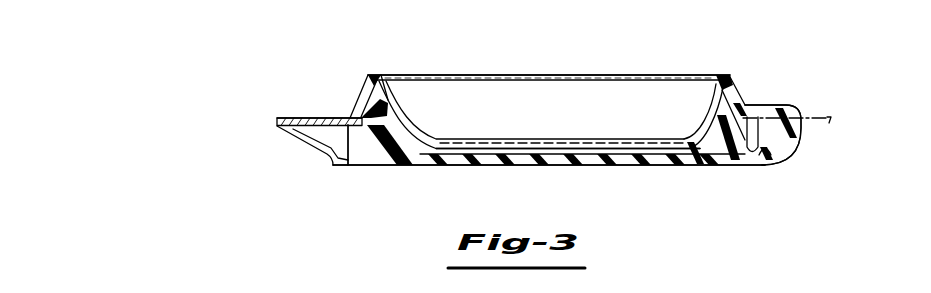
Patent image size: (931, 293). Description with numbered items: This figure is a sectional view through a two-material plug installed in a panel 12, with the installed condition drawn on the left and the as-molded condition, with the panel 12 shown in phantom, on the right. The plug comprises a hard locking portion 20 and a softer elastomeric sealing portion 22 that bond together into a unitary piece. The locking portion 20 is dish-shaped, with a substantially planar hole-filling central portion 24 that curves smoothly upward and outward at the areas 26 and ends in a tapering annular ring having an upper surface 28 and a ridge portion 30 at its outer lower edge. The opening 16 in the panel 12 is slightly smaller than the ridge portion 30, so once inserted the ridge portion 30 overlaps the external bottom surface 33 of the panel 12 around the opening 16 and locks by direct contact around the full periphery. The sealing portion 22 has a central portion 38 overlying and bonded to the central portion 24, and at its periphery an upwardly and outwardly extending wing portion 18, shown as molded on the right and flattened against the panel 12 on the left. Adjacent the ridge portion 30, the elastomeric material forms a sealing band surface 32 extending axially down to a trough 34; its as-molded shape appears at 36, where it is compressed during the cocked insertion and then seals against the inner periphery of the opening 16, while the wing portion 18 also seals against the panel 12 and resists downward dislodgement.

The panel 12 is at (288, 115).
The opening 16 is at (351, 127).
The wing portion 18 is at (303, 149).
The locking portion 20 is at (364, 66).
The sealing portion 22 is at (572, 173).
The central portion 24 is at (533, 148).
The curved areas 26 is at (398, 138).
The upper surface 28 is at (369, 77).
The ridge portion 30 is at (348, 116).
The sealing band surface 32 is at (770, 122).
The bottom surface 33 is at (347, 168).
The trough 34 is at (768, 156).
The as-molded sealing portion location 36 is at (748, 118).
The central portion 38 is at (628, 165).